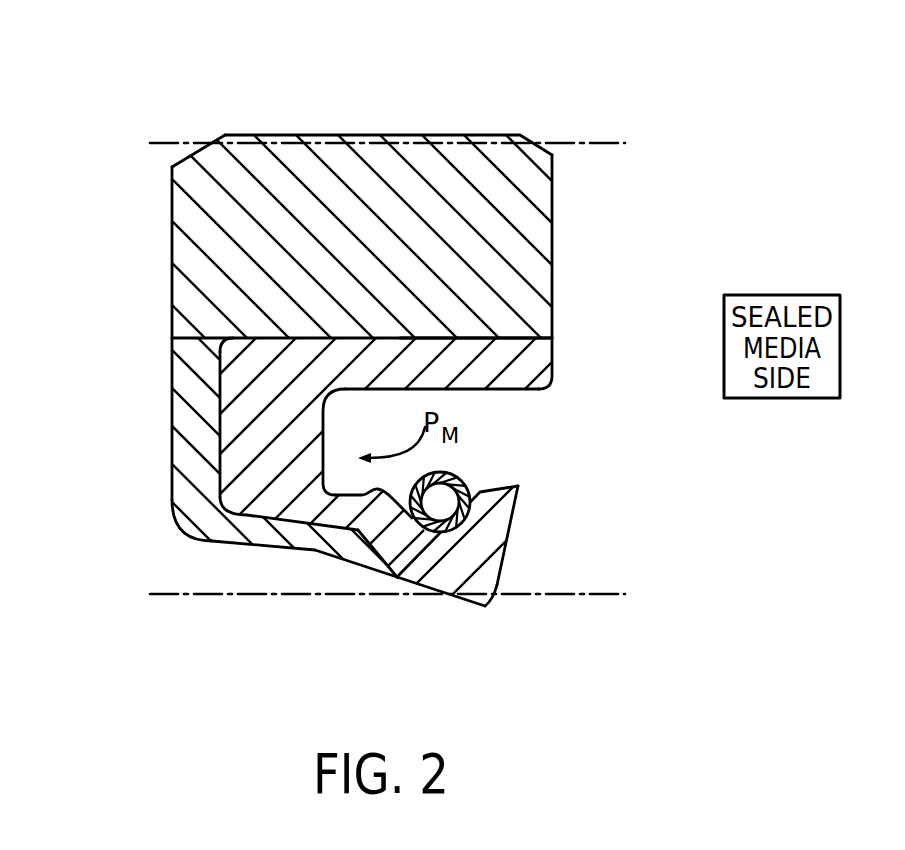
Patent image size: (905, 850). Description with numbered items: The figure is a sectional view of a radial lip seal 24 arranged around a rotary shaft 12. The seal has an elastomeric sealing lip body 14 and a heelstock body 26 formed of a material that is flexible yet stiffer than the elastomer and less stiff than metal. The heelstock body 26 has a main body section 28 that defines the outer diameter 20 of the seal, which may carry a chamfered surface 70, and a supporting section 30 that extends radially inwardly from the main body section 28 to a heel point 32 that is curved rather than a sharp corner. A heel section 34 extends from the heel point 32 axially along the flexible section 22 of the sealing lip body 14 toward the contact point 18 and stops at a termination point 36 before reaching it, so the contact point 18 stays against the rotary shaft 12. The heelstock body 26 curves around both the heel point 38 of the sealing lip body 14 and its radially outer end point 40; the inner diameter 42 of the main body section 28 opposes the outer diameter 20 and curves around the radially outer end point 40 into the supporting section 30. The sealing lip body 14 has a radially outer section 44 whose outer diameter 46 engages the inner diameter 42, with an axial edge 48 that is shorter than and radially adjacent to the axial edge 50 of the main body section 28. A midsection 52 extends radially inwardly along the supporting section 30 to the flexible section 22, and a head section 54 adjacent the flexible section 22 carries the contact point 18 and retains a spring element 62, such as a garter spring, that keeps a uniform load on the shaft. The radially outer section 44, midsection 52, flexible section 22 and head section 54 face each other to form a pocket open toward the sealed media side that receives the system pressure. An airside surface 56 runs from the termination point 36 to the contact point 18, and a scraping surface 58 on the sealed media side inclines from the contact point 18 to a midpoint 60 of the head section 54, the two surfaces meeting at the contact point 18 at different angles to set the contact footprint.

The rotary shaft 12 is at (178, 595).
The sealing lip body 14 is at (232, 545).
The contact point 18 is at (482, 610).
The outer diameter 20 is at (405, 135).
The flexible section 22 is at (378, 532).
The radial lip seal 24 is at (86, 52).
The heelstock body 26 is at (172, 272).
The main body section 28 is at (250, 232).
The supporting section 30 is at (197, 397).
The heel point 32 is at (200, 505).
The heel section 34 is at (303, 532).
The termination point 36 is at (399, 578).
The heel point 38 is at (185, 516).
The radially outer end point 40 is at (172, 345).
The inner diameter 42 is at (487, 338).
The radially outer section 44 is at (533, 365).
The outer diameter 46 is at (423, 340).
The axial edge 48 is at (552, 358).
The axial edge 50 is at (552, 235).
The midsection 52 is at (247, 437).
The head section 54 is at (520, 528).
The airside surface 56 is at (458, 556).
The scraping surface 58 is at (505, 588).
The midpoint 60 is at (510, 575).
The spring element 62 is at (487, 494).
The chamfered surface 70 is at (174, 158).